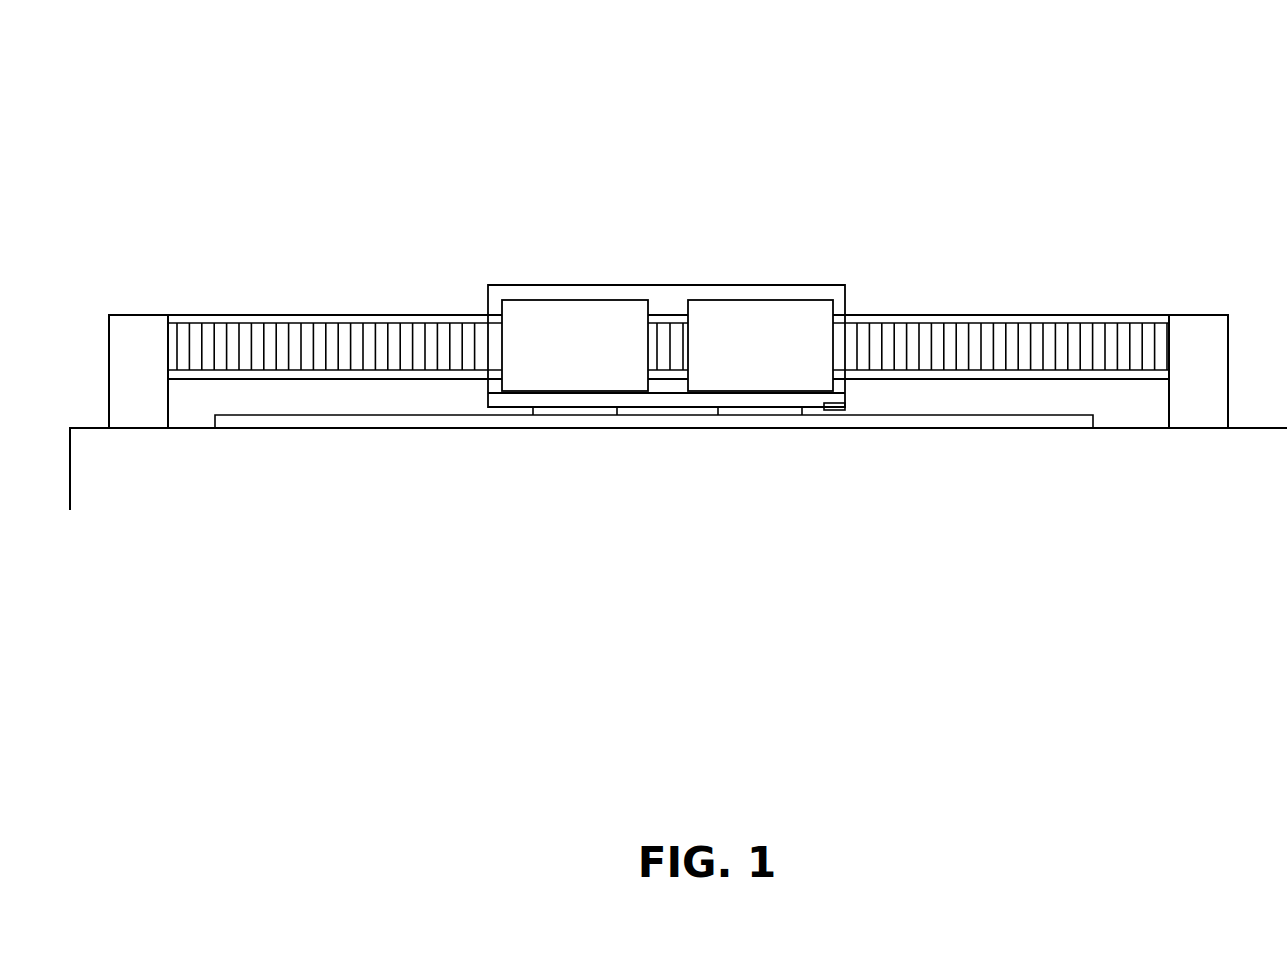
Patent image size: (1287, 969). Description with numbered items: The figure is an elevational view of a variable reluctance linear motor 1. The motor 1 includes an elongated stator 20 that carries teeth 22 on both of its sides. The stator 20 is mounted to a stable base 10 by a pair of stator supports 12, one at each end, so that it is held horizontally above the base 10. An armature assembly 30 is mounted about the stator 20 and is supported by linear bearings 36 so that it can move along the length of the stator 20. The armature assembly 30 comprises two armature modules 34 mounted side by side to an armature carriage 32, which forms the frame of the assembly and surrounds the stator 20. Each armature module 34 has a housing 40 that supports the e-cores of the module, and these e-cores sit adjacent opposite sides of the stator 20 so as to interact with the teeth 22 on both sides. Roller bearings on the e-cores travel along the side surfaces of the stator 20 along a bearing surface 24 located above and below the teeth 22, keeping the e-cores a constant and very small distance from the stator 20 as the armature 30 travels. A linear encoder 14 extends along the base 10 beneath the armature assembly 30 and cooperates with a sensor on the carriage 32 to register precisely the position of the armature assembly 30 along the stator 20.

The variable reluctance linear motor 1 is at (318, 132).
The stable base 10 is at (712, 525).
The stator supports 12 is at (122, 395).
The linear encoder 14 is at (1082, 422).
The stator 20 is at (672, 315).
The teeth 22 is at (1045, 360).
The bearing surface 24 is at (887, 373).
The armature assembly 30 is at (687, 315).
The armature carriage 32 is at (837, 293).
The armature modules 34 is at (545, 363).
The linear bearings 36 is at (598, 413).
The housing 40 is at (830, 410).